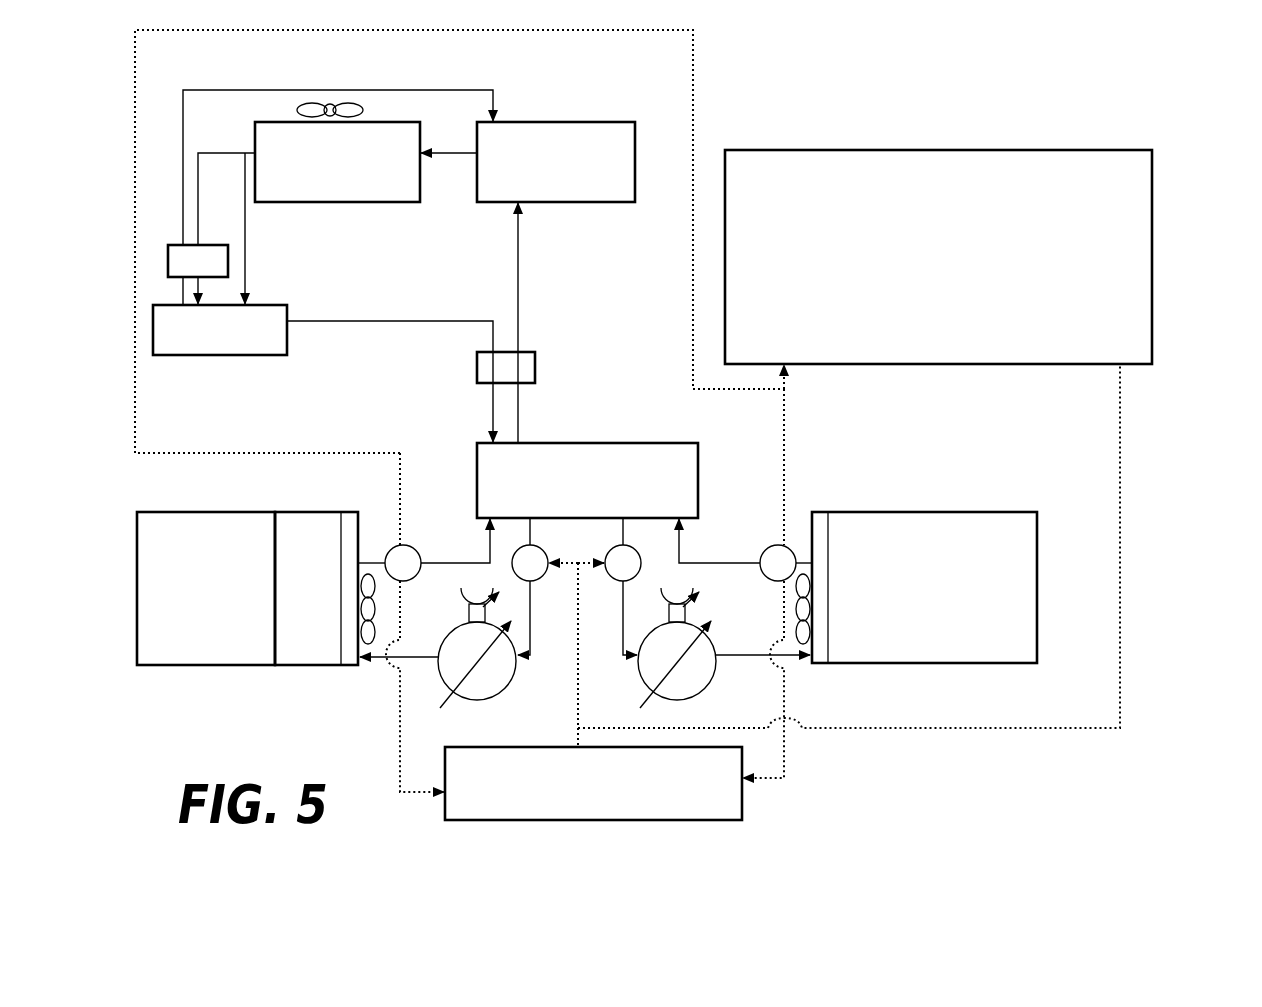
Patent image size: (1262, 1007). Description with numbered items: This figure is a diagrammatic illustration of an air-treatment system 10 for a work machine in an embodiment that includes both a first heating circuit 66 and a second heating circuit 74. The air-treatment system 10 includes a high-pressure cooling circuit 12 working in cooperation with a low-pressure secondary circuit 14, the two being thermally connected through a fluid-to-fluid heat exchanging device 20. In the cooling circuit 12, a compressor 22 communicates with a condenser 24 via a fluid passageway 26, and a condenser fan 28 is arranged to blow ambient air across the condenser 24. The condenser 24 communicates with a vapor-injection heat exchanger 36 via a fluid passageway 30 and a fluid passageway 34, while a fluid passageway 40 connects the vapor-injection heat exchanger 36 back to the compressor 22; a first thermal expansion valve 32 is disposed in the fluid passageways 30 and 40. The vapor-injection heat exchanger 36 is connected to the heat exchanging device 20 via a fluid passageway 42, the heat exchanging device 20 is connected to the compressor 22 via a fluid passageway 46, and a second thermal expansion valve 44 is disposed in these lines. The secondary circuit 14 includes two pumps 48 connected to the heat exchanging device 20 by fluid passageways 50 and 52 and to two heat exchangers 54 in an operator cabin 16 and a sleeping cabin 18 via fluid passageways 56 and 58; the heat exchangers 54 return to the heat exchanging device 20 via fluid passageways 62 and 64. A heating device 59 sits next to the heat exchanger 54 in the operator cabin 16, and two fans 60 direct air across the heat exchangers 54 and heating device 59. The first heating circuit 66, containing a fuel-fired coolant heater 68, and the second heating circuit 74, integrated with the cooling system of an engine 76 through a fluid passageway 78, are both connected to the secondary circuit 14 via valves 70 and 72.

The air-treatment system 10 is at (866, 80).
The cooling circuit 12 is at (549, 94).
The secondary circuit 14 is at (818, 462).
The operator cabin 16 is at (206, 588).
The sleeping cabin 18 is at (924, 587).
The fluid-to-fluid heat exchanging device 20 is at (587, 480).
The compressor 22 is at (556, 162).
The condenser 24 is at (337, 162).
The fluid passageway 26 is at (452, 160).
The condenser fan 28 is at (363, 110).
The fluid passageway 30 is at (199, 218).
The first thermal expansion valve 32 is at (198, 261).
The fluid passageway 34 is at (246, 252).
The vapor-injection heat exchanger 36 is at (220, 330).
The fluid passageway 40 is at (330, 90).
The fluid passageway 42 is at (380, 321).
The second thermal expansion valve 44 is at (506, 367).
The fluid passageway 46 is at (521, 292).
The pump 48 is at (495, 682).
The fluid passageway 50 is at (532, 546).
The fluid passageway 52 is at (626, 546).
The heat exchanger 54 is at (358, 522).
The fluid passageway 56 is at (422, 657).
The fluid passageway 58 is at (722, 655).
The heating device 59 is at (316, 588).
The fan 60 is at (374, 630).
The fluid passageway 62 is at (431, 563).
The fluid passageway 64 is at (699, 564).
The first heating circuit 66 is at (812, 790).
The fuel-fired coolant heater 68 is at (593, 783).
The valve 70 is at (576, 646).
The valve 72 is at (590, 590).
The second heating circuit 74 is at (1166, 213).
The engine 76 is at (938, 257).
The fluid passageway 78 is at (1121, 582).